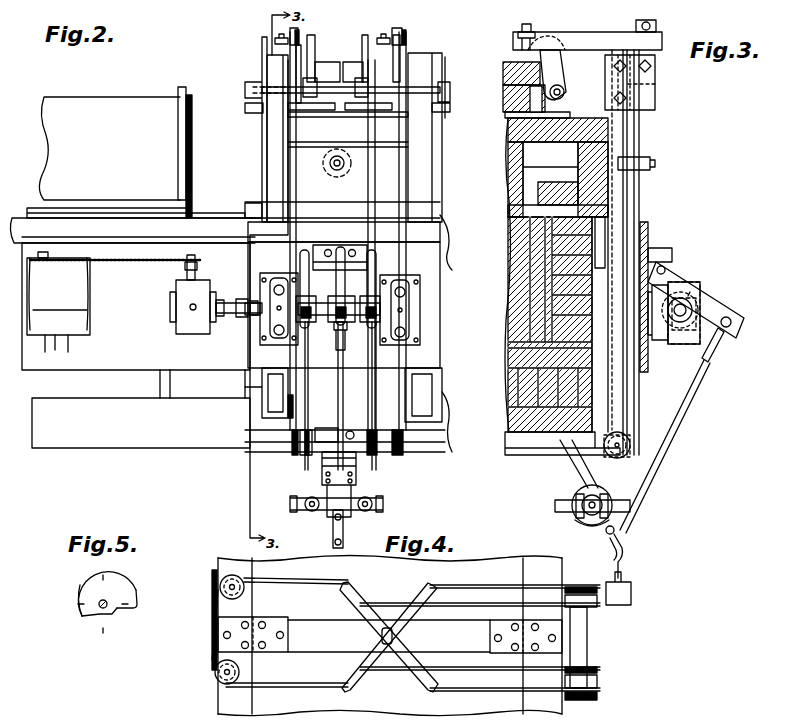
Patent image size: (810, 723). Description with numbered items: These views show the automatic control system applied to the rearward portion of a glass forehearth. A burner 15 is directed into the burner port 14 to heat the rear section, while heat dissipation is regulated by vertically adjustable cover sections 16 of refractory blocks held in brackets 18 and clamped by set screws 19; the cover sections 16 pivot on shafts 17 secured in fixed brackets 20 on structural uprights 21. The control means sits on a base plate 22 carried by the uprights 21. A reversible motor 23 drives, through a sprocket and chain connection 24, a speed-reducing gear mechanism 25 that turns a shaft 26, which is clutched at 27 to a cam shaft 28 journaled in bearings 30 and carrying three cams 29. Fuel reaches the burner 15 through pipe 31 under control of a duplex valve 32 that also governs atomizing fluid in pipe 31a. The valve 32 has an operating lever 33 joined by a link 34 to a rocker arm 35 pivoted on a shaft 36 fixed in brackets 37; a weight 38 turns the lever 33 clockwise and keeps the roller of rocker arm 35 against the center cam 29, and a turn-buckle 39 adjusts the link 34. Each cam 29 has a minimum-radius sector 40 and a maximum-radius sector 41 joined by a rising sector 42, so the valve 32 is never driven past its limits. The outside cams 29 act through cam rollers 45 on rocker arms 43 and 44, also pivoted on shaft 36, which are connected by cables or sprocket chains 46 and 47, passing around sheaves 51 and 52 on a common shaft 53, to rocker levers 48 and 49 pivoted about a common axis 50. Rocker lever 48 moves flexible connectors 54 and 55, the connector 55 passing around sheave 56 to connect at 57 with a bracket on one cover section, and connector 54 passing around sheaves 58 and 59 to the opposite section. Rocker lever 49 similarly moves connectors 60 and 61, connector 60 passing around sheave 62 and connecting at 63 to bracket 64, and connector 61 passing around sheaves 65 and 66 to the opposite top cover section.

In FIG. 2, the burner port 14 is at (347, 164).
In FIG. 3, the burner port 14 is at (575, 170).
In FIG. 3, the burner 15 is at (644, 160).
In FIG. 2, the cover sections 16 is at (352, 74).
In FIG. 3, the cover sections 16 is at (506, 74).
In FIG. 2, the shafts 17 is at (386, 86).
In FIG. 3, the shafts 17 is at (563, 93).
In FIG. 2, the brackets 18 is at (312, 58).
In FIG. 3, the brackets 18 is at (556, 58).
In FIG. 3, the set screws 19 is at (526, 30).
In FIG. 2, the fixed brackets 20 is at (262, 66).
In FIG. 3, the fixed brackets 20 is at (656, 90).
In FIG. 2, the structural uprights 21 is at (262, 141).
In FIG. 3, the structural uprights 21 is at (642, 190).
In FIG. 4, the structural uprights 21 is at (590, 655).
In FIG. 2, the base plate 22 is at (72, 362).
In FIG. 3, the base plate 22 is at (647, 230).
In FIG. 2, the reversible motor 23 is at (58, 302).
In FIG. 2, the sprocket and chain connection 24 is at (102, 265).
In FIG. 2, the speed-reducing gear mechanism 25 is at (193, 284).
In FIG. 2, the shaft 26 is at (222, 314).
In FIG. 2, the clutch 27 is at (236, 303).
In FIG. 2, the cam shaft 28 is at (320, 316).
In FIG. 3, the cam shaft 28 is at (700, 302).
In FIG. 5, the cam shaft 28 is at (100, 608).
In FIG. 3, the cams 29 is at (666, 325).
In FIG. 5, the cams 29 is at (138, 608).
In FIG. 2, the bearings 30 is at (270, 284).
In FIG. 3, the bearings 30 is at (682, 346).
In FIG. 2, the pipe 31 is at (345, 520).
In FIG. 2, the pipe 31a is at (316, 512).
In FIG. 3, the pipe 31a is at (566, 500).
In FIG. 2, the valve 32 is at (348, 500).
In FIG. 3, the valve 32 is at (580, 522).
In FIG. 3, the operating lever 33 is at (626, 546).
In FIG. 2, the link 34 is at (341, 430).
In FIG. 3, the link 34 is at (684, 422).
In FIG. 2, the rocker arm 35 is at (346, 280).
In FIG. 2, the shaft 36 is at (362, 250).
In FIG. 3, the shaft 36 is at (676, 266).
In FIG. 2, the brackets 37 is at (320, 246).
In FIG. 3, the brackets 37 is at (668, 252).
In FIG. 3, the weight 38 is at (633, 590).
In FIG. 2, the turn-buckle 39 is at (338, 345).
In FIG. 3, the turn-buckle 39 is at (720, 342).
In FIG. 5, the sector 40 is at (108, 616).
In FIG. 5, the sector 41 is at (124, 580).
In FIG. 5, the sector 42 is at (78, 597).
In FIG. 2, the rocker arm 43 is at (302, 272).
In FIG. 3, the rocker arm 43 is at (722, 306).
In FIG. 2, the rocker arm 44 is at (378, 288).
In FIG. 3, the cam roller 45 is at (692, 292).
In FIG. 2, the cable or sprocket chain 46 is at (305, 380).
In FIG. 4, the cable or sprocket chain 46 is at (442, 604).
In FIG. 2, the cable or sprocket chain 47 is at (376, 364).
In FIG. 4, the cable or sprocket chain 47 is at (442, 670).
In FIG. 4, the rocker lever 48 is at (356, 612).
In FIG. 4, the rocker lever 49 is at (406, 630).
In FIG. 4, the common axis 50 is at (382, 637).
In FIG. 2, the sheave 51 is at (305, 457).
In FIG. 4, the sheave 51 is at (594, 606).
In FIG. 2, the sheave 52 is at (377, 455).
In FIG. 4, the sheave 52 is at (600, 670).
In FIG. 2, the common shaft 53 is at (328, 440).
In FIG. 3, the common shaft 53 is at (632, 452).
In FIG. 4, the common shaft 53 is at (600, 681).
In FIG. 4, the flexible connector 54 is at (266, 580).
In FIG. 2, the flexible connector 55 is at (398, 192).
In FIG. 4, the flexible connector 55 is at (442, 692).
In FIG. 2, the sheave 56 is at (404, 456).
In FIG. 4, the sheave 56 is at (594, 700).
In FIG. 2, the connection 57 is at (406, 38).
In FIG. 4, the sheave 58 is at (256, 599).
In FIG. 4, the sheave 59 is at (218, 672).
In FIG. 2, the flexible connector 60 is at (298, 186).
In FIG. 3, the flexible connector 60 is at (640, 130).
In FIG. 4, the flexible connector 60 is at (442, 586).
In FIG. 4, the flexible connector 61 is at (268, 688).
In FIG. 2, the sheave 62 is at (294, 458).
In FIG. 3, the sheave 62 is at (626, 462).
In FIG. 4, the sheave 62 is at (586, 584).
In FIG. 2, the connection 63 is at (300, 38).
In FIG. 3, the connection 63 is at (642, 38).
In FIG. 3, the bracket 64 is at (596, 38).
In FIG. 4, the sheave 65 is at (242, 667).
In FIG. 4, the sheave 66 is at (212, 572).